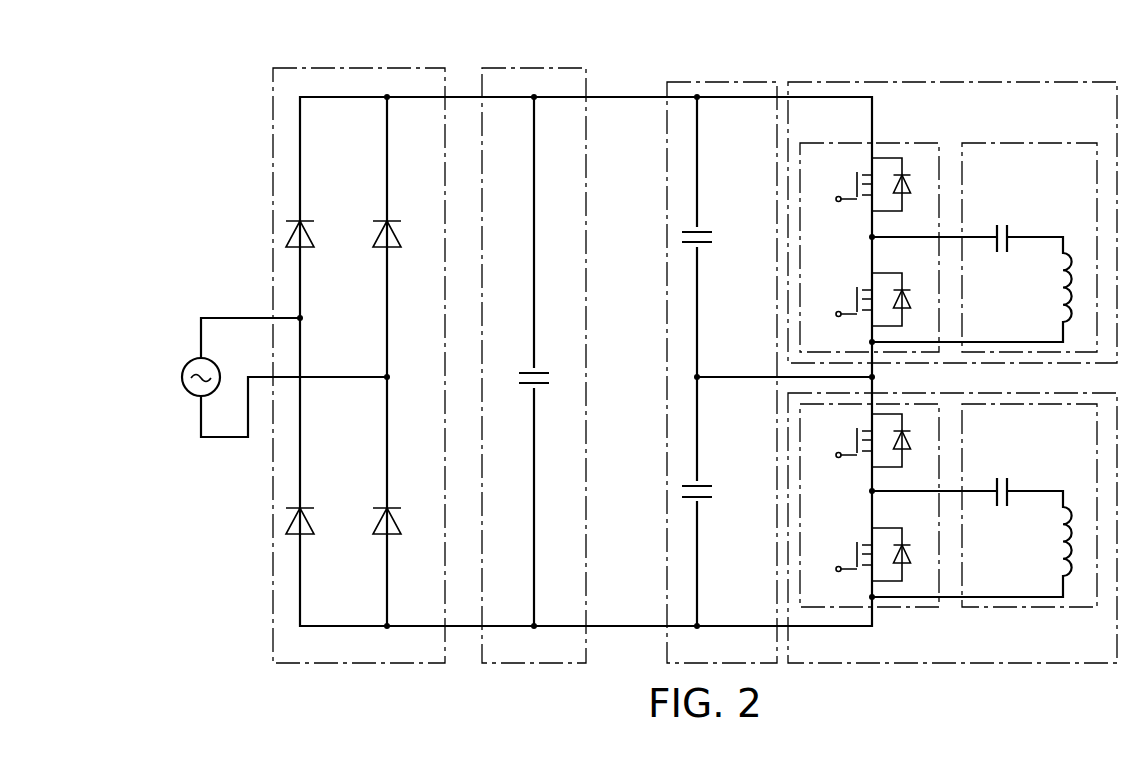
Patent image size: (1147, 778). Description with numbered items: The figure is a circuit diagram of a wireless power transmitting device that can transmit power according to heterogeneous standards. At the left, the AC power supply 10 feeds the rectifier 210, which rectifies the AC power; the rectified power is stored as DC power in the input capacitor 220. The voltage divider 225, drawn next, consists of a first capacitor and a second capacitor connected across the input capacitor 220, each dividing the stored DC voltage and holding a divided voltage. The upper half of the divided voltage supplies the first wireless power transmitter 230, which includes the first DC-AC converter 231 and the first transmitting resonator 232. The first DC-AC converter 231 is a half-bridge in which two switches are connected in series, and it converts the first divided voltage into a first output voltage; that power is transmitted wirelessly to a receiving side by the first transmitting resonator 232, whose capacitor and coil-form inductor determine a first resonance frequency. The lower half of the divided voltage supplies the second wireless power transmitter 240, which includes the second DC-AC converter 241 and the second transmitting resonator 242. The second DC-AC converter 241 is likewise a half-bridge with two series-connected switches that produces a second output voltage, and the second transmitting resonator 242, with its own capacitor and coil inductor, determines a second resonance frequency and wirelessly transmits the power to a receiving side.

The AC power supply 10 is at (185, 360).
The rectifier 210 is at (430, 50).
The input capacitor 220 is at (545, 68).
The voltage divider 225 is at (690, 82).
The first wireless power transmitter 230 is at (952, 203).
The first DC-AC converter 231 is at (918, 125).
The first transmitting resonator 232 is at (1078, 125).
The second wireless power transmitter 240 is at (952, 550).
The second DC-AC converter 241 is at (896, 608).
The second transmitting resonator 242 is at (984, 528).